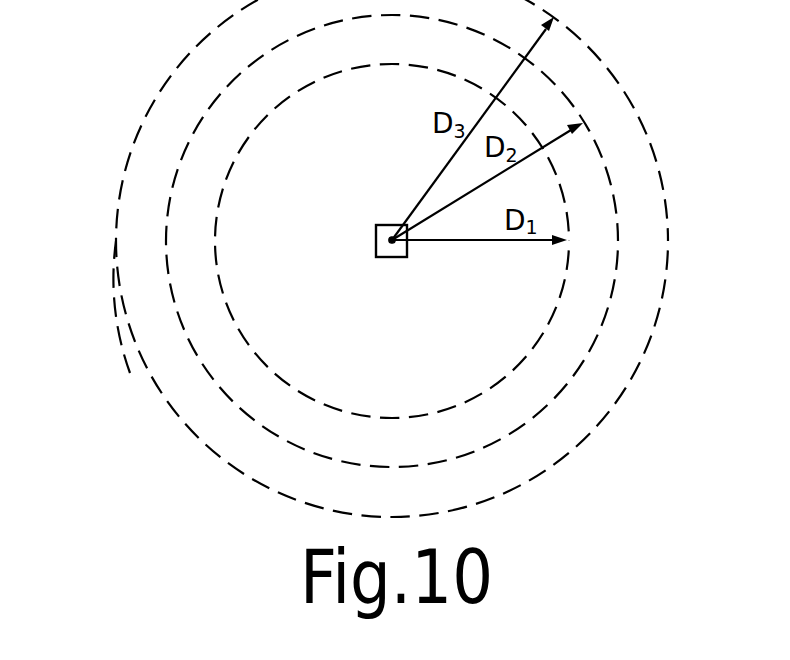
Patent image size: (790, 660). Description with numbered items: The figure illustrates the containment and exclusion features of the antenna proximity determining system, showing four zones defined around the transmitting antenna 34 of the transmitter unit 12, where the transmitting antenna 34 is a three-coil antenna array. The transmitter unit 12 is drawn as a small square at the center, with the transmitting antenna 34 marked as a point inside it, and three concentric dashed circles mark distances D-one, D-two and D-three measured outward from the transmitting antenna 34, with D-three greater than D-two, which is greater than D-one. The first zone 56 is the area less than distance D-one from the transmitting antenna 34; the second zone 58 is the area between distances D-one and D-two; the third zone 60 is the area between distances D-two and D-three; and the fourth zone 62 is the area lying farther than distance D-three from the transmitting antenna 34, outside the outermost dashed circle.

The transmitter unit 12 is at (397, 257).
The transmitting antenna 34 is at (392, 240).
The first zone 56 is at (307, 117).
The second zone 58 is at (195, 188).
The third zone 60 is at (145, 289).
The fourth zone 62 is at (130, 373).